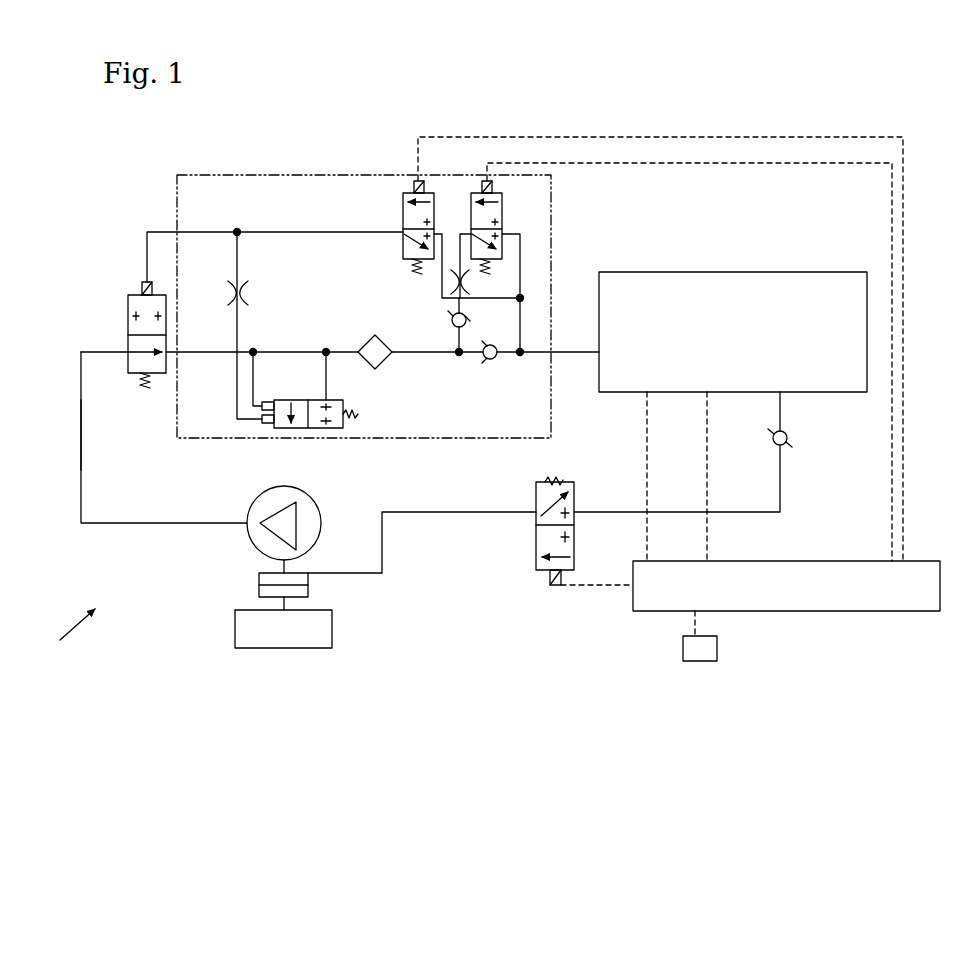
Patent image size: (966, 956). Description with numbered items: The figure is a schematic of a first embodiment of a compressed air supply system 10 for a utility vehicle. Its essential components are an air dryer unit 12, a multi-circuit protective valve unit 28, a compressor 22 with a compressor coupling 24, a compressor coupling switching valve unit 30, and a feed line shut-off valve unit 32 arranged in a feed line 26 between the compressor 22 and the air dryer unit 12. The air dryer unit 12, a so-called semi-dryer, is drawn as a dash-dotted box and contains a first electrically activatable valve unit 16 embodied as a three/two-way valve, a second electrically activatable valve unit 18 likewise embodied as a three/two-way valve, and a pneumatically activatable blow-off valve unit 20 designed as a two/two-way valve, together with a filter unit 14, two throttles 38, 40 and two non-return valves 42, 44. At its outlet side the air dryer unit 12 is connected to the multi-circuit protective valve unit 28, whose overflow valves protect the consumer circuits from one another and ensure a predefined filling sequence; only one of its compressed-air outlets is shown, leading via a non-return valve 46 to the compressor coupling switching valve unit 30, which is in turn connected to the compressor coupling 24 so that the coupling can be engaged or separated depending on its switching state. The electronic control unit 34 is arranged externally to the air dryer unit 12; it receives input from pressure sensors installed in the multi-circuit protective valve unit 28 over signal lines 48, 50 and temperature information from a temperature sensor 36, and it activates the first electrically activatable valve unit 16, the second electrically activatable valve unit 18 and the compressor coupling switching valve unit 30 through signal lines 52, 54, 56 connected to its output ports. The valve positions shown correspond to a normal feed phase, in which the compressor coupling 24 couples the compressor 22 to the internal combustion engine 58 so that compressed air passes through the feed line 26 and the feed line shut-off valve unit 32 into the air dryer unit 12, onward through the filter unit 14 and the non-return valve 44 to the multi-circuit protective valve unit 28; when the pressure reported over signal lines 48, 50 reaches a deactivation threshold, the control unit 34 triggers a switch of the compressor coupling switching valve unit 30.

The compressed air supply system 10 is at (65, 639).
The air dryer unit 12 is at (261, 172).
The filter unit 14 is at (383, 362).
The first electrically activatable valve unit 16 is at (402, 212).
The second electrically activatable valve unit 18 is at (503, 211).
The blow-off valve unit 20 is at (300, 400).
The compressor 22 is at (313, 498).
The compressor coupling 24 is at (259, 580).
The feed line 26 is at (81, 483).
The multi-circuit protective valve unit 28 is at (733, 332).
The compressor coupling switching valve unit 30 is at (533, 546).
The feed line shut-off valve unit 32 is at (128, 300).
The electronic control unit 34 is at (786, 586).
The temperature sensor 36 is at (683, 653).
The throttle 38 is at (468, 286).
The throttle 40 is at (246, 293).
The non-return valve 42 is at (450, 315).
The non-return valve 44 is at (488, 344).
The non-return valve 46 is at (788, 433).
The signal line 48 is at (647, 452).
The signal line 50 is at (707, 456).
The signal line 52 is at (905, 493).
The signal line 54 is at (891, 492).
The signal line 56 is at (583, 590).
The internal combustion engine 58 is at (332, 630).